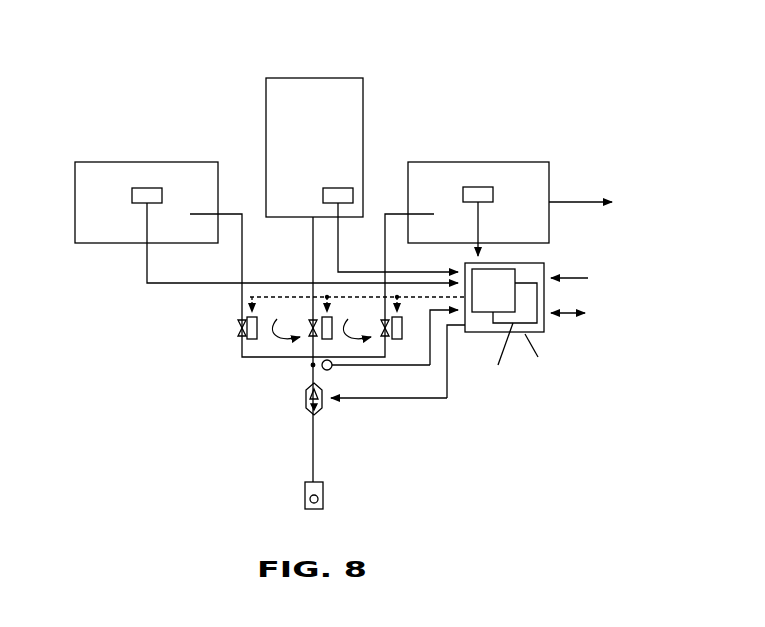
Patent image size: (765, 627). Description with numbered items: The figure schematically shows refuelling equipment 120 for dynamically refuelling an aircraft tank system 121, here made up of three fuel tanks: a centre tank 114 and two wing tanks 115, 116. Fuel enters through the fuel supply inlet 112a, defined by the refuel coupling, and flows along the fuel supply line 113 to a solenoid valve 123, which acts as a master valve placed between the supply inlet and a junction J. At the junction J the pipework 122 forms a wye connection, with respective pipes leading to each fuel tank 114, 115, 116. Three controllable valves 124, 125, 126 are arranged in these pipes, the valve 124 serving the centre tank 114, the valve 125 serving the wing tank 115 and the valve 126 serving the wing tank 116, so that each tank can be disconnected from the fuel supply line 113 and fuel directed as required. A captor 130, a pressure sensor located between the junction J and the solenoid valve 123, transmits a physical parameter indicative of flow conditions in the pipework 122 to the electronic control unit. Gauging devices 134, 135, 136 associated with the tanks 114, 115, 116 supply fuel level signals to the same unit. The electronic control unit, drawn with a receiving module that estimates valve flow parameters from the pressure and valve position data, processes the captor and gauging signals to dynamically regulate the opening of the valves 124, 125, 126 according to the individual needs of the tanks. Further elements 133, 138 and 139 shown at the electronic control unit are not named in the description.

The centre tank 114 is at (288, 77).
The wing tank 115 is at (95, 161).
The wing tank 116 is at (528, 160).
The gauging device 134 is at (336, 187).
The gauging device 135 is at (147, 187).
The gauging device 136 is at (478, 186).
The aircraft tank system 121 is at (438, 114).
The pipework 122 is at (228, 213).
The controllable valve 124 is at (297, 318).
The controllable valve 125 is at (235, 333).
The controllable valve 126 is at (368, 318).
The equipment 120 is at (405, 352).
The memory 133 is at (483, 313).
The communication interface 138 is at (565, 318).
The input signal 139 is at (570, 277).
The captor 130 is at (333, 370).
The solenoid valve 123 is at (304, 401).
The fuel supply line 113 is at (313, 443).
The fuel supply inlet 112a is at (320, 497).
The junction J is at (310, 367).